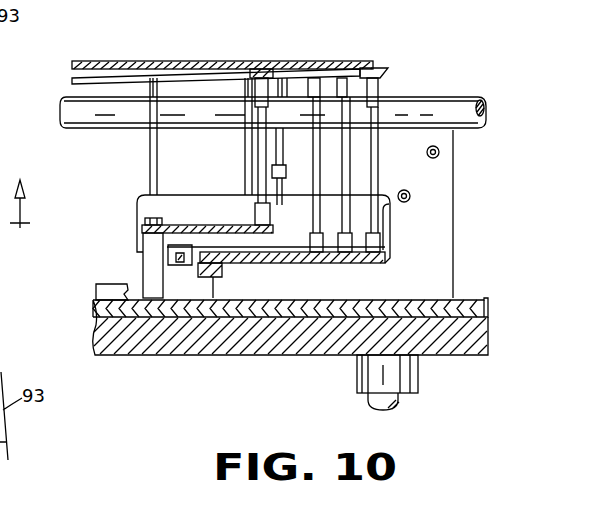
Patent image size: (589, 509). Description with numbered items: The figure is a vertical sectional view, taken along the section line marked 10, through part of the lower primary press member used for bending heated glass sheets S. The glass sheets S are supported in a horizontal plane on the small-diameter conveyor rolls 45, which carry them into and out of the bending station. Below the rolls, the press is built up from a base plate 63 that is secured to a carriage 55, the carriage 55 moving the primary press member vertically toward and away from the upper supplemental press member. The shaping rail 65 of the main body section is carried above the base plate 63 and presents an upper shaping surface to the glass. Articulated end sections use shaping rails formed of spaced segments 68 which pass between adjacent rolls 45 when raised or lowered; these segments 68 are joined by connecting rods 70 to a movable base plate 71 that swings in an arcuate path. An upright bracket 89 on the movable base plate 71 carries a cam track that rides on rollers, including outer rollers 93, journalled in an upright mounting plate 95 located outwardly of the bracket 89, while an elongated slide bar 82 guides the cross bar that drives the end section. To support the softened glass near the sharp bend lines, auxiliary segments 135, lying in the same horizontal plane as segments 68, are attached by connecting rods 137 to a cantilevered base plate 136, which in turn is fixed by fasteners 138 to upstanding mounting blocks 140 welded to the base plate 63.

The glass sheets S is at (118, 60).
The shaping rail 65 is at (74, 80).
The segments 68 is at (386, 70).
The conveyor rolls 45 is at (438, 100).
The auxiliary segments 135 is at (261, 68).
The connecting rods 137 is at (258, 140).
The connecting rods 70 is at (348, 178).
The cantilevered base plate 136 is at (182, 224).
The fasteners 138 is at (148, 219).
The mounting blocks 140 is at (146, 272).
The movable base plate 71 is at (274, 260).
The upright bracket 89 is at (386, 232).
The outer rollers 93 is at (410, 193).
The upright mounting plate 95 is at (453, 222).
The slide bar 82 is at (100, 291).
The base plate 63 is at (92, 314).
The carriage 55 is at (131, 356).
The viewing direction arrow 10 is at (19, 219).